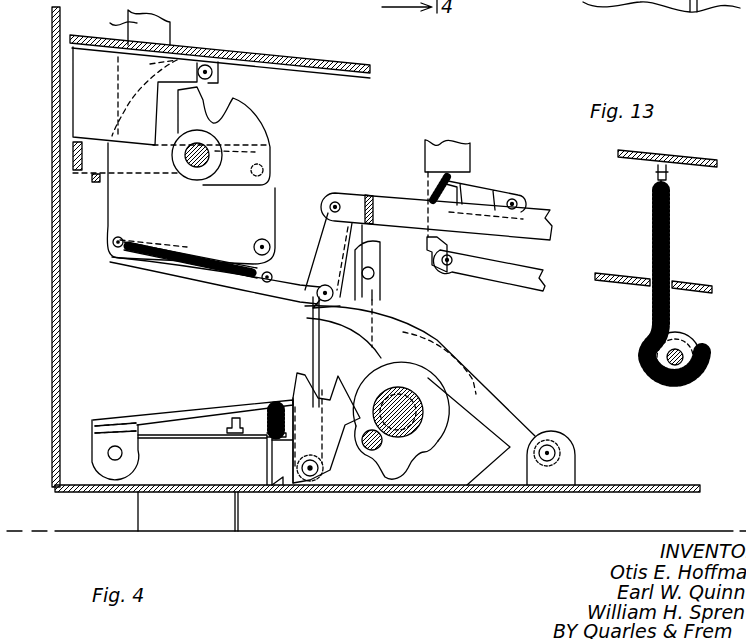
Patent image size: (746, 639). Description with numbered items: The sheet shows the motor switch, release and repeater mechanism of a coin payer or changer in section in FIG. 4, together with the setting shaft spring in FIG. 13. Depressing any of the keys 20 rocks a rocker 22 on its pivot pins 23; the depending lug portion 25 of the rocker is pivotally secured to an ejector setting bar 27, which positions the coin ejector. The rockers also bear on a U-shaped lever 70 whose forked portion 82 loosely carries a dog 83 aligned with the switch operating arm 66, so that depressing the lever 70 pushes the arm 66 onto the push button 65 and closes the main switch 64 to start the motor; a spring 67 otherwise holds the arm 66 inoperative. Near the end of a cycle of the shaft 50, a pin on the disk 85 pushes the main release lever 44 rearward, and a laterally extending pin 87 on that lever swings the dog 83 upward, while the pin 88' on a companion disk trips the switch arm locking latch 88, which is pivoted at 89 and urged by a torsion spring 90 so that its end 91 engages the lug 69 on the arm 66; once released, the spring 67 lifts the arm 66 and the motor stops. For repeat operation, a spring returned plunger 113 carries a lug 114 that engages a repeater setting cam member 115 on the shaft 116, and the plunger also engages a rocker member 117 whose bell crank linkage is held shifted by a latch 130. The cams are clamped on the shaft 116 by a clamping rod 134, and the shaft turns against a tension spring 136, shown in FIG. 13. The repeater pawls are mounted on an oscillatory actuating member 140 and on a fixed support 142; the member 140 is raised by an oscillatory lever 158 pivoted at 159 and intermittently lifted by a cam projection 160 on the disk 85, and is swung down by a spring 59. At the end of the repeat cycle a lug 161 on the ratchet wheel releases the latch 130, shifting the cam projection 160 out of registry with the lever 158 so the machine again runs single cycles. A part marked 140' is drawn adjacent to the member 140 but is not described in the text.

In FIG. 4, the keys 20 is at (460, 157).
In FIG. 4, the rocker 22 is at (480, 188).
In FIG. 4, the pivot pins 23 is at (519, 201).
In FIG. 4, the depending lug portion 25 is at (452, 250).
In FIG. 4, the ejector setting bar 27 is at (520, 278).
In FIG. 4, the main release lever 44 is at (378, 295).
In FIG. 4, the shaft 50 is at (410, 404).
In FIG. 4, the spring 59 is at (177, 260).
In FIG. 4, the main switch 64 is at (177, 471).
In FIG. 4, the push button 65 is at (232, 419).
In FIG. 4, the switch operating arm 66 is at (177, 414).
In FIG. 4, the spring 67 is at (270, 413).
In FIG. 4, the laterally extending lug 69 is at (318, 385).
In FIG. 4, the U-shaped lever 70 is at (394, 197).
In FIG. 4, the forked portion 82 is at (349, 196).
In FIG. 4, the dog 83 is at (322, 238).
In FIG. 4, the disk 85 is at (436, 428).
In FIG. 4, the laterally extending pin 87 is at (374, 271).
In FIG. 4, the switch arm locking latch 88 is at (268, 440).
In FIG. 4, the pin 88' is at (358, 453).
In FIG. 4, the pivot 89 is at (318, 487).
In FIG. 4, the torsion spring 90 is at (278, 488).
In FIG. 4, the end of latch 91 is at (307, 392).
In FIG. 4, the spring returned plunger 113 is at (104, 66).
In FIG. 4, the lug 114 is at (208, 64).
In FIG. 4, the repeater setting cam member 115 is at (254, 137).
In FIG. 4, the shaft 116 is at (178, 165).
In FIG. 4, the rocker member 117 is at (84, 152).
In FIG. 4, the latch 130 is at (93, 181).
In FIG. 4, the clamping rod 134 is at (192, 167).
In FIG. 13, the clamping rod 134 is at (676, 348).
In FIG. 13, the tension spring 136 is at (667, 252).
In FIG. 4, the oscillatory actuating member 140 is at (221, 286).
In FIG. 4, the arm 140' is at (292, 316).
In FIG. 4, the fixed support 142 is at (113, 221).
In FIG. 4, the oscillatory lever 158 is at (432, 332).
In FIG. 4, the pivot 159 is at (576, 452).
In FIG. 4, the cam projection 160 is at (407, 470).
In FIG. 4, the lug 161 is at (144, 95).